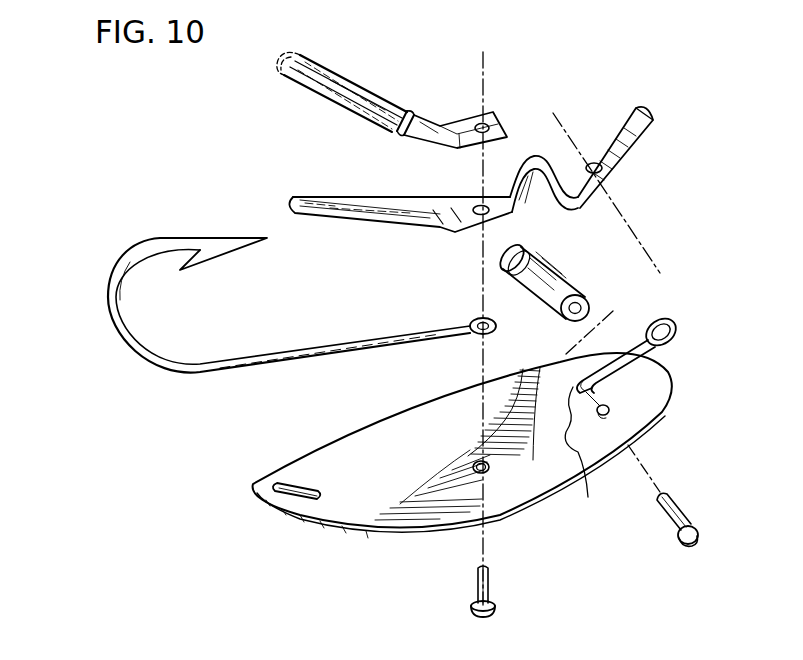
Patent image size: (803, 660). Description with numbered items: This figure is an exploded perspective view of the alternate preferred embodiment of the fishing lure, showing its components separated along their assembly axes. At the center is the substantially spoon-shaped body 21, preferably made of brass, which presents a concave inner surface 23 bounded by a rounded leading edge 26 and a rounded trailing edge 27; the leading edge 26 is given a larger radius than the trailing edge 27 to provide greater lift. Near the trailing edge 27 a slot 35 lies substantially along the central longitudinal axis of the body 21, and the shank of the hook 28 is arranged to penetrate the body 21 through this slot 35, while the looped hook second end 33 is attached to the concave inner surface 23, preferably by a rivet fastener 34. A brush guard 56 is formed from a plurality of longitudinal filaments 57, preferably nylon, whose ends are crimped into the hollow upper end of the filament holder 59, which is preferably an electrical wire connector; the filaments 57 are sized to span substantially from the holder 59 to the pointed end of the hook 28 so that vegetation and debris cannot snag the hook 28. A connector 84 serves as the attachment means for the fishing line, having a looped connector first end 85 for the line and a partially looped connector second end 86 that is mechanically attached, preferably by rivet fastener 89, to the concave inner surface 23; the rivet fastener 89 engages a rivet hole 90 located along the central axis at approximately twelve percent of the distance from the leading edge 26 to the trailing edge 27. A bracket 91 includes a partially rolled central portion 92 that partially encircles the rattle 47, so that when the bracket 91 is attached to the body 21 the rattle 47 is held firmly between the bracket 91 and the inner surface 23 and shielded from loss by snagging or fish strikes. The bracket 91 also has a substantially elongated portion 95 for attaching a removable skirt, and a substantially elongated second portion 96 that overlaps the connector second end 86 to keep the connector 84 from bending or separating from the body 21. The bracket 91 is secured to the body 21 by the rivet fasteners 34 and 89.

The brush guard 56 is at (392, 88).
The longitudinal filaments 57 is at (350, 107).
The filament holder 59 is at (468, 108).
The bracket 91 is at (434, 171).
The partially rolled central portion 92 is at (538, 156).
The substantially elongated portion 95 is at (337, 218).
The substantially elongated second portion 96 is at (598, 152).
The rattle 47 is at (559, 256).
The hook 28 is at (256, 305).
The looped hook second end 33 is at (470, 322).
The connector 84 is at (660, 332).
The looped connector first end 85 is at (680, 338).
The spoon-shaped body portion 21 is at (458, 453).
The slot 35 is at (290, 484).
The rounded trailing edge 27 is at (256, 494).
The concave inner surface 23 is at (548, 470).
The rounded leading edge 26 is at (680, 376).
The partially looped connector second end 86 is at (568, 424).
The rivet hole 90 is at (612, 412).
The rivet fastener 34 is at (477, 577).
The rivet fastener 89 is at (673, 532).